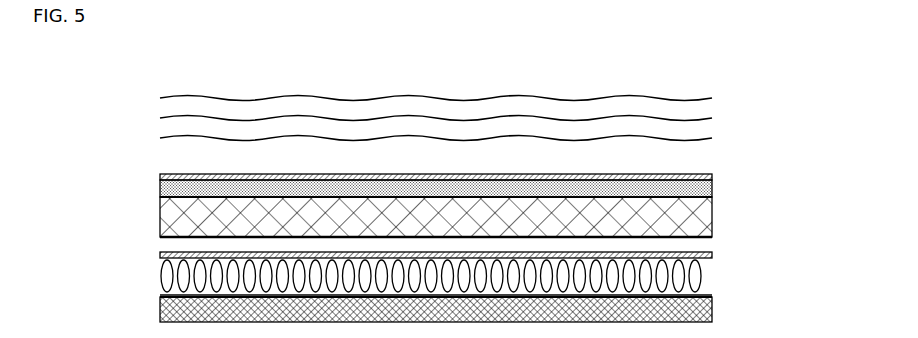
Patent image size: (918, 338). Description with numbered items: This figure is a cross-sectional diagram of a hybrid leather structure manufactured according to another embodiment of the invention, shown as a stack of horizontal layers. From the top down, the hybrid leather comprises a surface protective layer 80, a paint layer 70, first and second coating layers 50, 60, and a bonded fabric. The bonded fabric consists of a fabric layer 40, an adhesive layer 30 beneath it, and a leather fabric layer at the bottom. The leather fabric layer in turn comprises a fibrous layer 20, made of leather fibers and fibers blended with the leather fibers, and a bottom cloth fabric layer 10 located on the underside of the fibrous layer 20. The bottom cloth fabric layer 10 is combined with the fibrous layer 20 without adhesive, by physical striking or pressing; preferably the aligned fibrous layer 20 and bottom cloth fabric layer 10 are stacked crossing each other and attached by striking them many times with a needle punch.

The bottom cloth fabric layer 10 is at (160, 312).
The fibrous layer 20 is at (700, 280).
The adhesive layer 30 is at (180, 243).
The fabric layer 40 is at (700, 221).
The first coating layer 50 is at (178, 193).
The second coating layer 60 is at (690, 156).
The paint layer 70 is at (180, 125).
The surface protective layer 80 is at (692, 104).